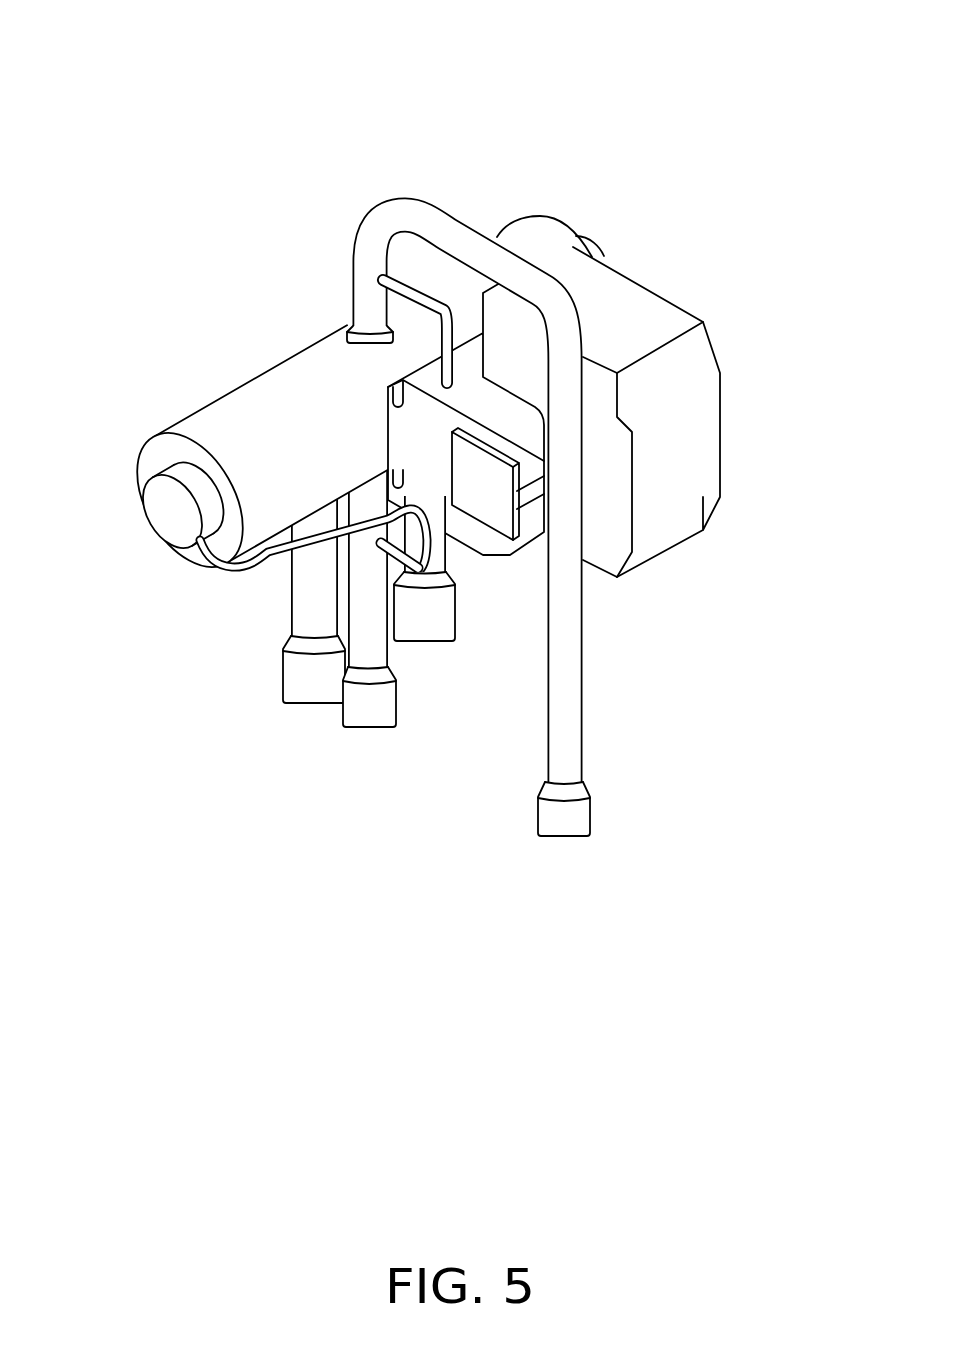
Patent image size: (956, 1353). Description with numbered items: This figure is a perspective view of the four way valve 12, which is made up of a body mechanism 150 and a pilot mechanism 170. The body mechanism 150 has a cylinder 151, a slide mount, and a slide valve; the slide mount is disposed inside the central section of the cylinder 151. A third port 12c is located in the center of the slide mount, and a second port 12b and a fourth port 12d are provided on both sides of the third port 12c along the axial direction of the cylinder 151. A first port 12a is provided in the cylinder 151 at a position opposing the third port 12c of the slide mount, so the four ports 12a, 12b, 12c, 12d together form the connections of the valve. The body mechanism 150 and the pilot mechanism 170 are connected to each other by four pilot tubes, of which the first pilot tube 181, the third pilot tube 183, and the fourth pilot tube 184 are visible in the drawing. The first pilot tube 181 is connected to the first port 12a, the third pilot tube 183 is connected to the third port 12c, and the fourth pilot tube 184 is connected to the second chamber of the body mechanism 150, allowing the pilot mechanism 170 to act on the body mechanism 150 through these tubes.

The four way valve 12 is at (700, 77).
The first port 12a is at (565, 833).
The second port 12b is at (453, 567).
The third port 12c is at (376, 714).
The fourth port 12d is at (313, 697).
The body mechanism 150 is at (307, 228).
The cylinder 151 is at (244, 403).
The pilot mechanism 170 is at (703, 277).
The first pilot tube 181 is at (362, 303).
The third pilot tube 183 is at (425, 630).
The fourth pilot tube 184 is at (251, 562).